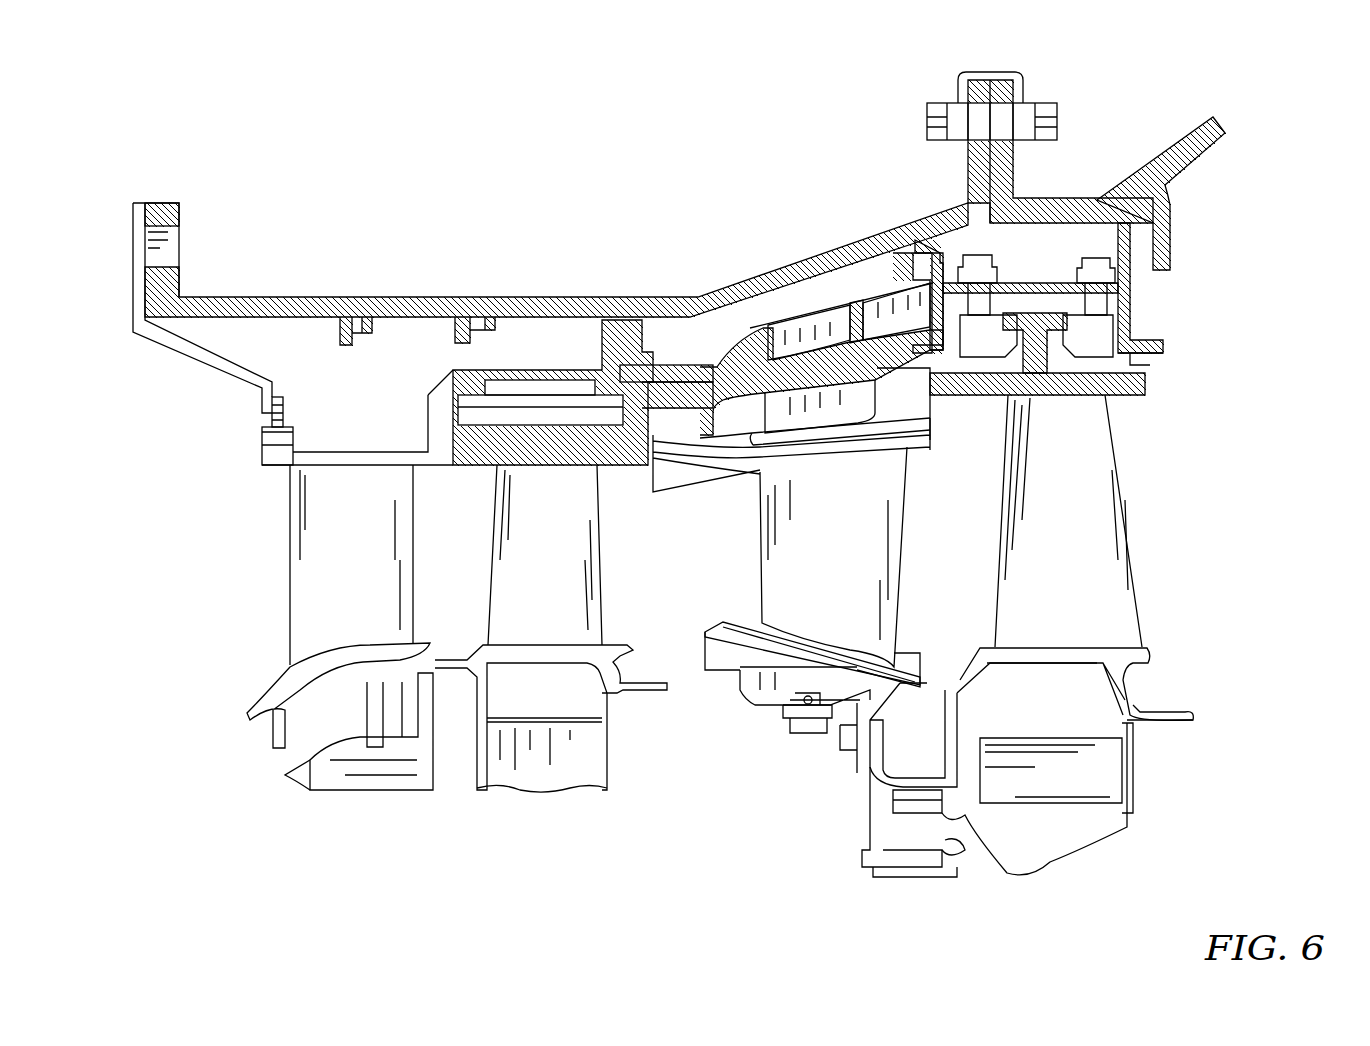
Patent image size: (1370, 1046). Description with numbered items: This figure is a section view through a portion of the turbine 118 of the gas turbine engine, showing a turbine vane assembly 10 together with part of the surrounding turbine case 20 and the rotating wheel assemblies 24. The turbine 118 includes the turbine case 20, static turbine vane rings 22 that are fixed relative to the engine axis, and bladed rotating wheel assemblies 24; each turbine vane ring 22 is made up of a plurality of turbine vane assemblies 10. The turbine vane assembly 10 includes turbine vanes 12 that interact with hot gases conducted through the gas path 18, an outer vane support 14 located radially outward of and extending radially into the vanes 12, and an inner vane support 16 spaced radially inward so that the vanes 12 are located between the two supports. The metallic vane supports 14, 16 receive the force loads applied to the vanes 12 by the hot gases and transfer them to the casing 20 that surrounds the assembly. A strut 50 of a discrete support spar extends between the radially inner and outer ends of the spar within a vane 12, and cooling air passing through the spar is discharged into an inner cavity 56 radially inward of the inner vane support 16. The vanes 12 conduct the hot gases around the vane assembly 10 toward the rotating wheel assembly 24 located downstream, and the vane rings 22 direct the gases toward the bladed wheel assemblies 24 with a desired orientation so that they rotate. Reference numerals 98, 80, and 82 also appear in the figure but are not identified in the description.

The turbine 118 is at (213, 158).
The turbine case 20 is at (700, 275).
The turbine vane assembly 10 is at (795, 300).
The outer vane support 14 is at (878, 280).
The strut 50 is at (863, 395).
The gas path 18 is at (669, 540).
The turbine blade 98 is at (805, 573).
The turbine vane 12 is at (915, 592).
The inner vane support 16 is at (730, 683).
The inner cavity 56 is at (823, 762).
The turbine vane ring 22 is at (720, 760).
The disk flange 80 is at (858, 785).
The seal 82 is at (955, 853).
The bladed rotating wheel assembly 24 is at (465, 763).